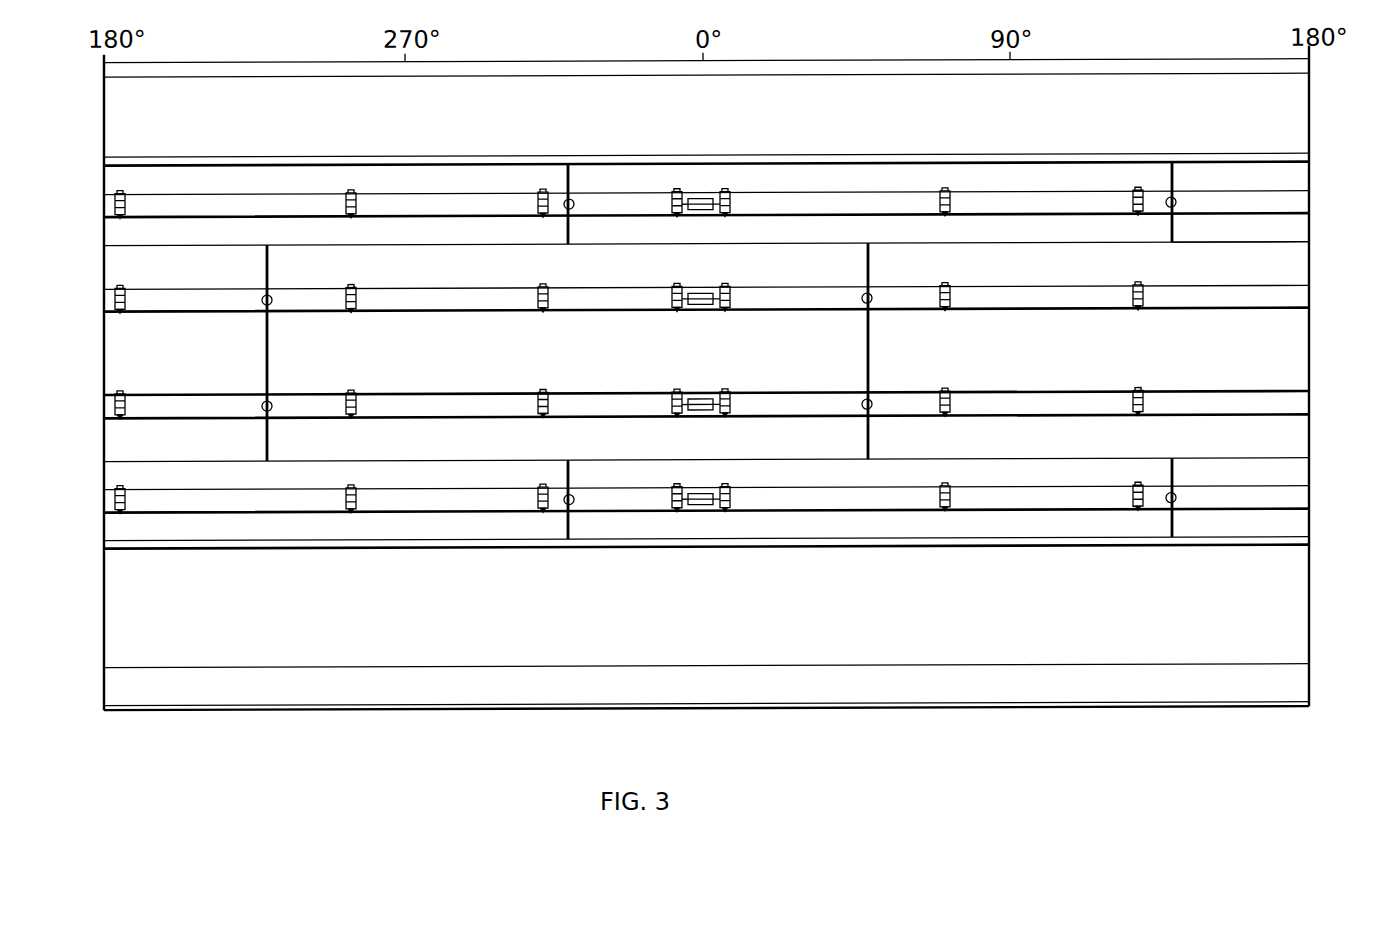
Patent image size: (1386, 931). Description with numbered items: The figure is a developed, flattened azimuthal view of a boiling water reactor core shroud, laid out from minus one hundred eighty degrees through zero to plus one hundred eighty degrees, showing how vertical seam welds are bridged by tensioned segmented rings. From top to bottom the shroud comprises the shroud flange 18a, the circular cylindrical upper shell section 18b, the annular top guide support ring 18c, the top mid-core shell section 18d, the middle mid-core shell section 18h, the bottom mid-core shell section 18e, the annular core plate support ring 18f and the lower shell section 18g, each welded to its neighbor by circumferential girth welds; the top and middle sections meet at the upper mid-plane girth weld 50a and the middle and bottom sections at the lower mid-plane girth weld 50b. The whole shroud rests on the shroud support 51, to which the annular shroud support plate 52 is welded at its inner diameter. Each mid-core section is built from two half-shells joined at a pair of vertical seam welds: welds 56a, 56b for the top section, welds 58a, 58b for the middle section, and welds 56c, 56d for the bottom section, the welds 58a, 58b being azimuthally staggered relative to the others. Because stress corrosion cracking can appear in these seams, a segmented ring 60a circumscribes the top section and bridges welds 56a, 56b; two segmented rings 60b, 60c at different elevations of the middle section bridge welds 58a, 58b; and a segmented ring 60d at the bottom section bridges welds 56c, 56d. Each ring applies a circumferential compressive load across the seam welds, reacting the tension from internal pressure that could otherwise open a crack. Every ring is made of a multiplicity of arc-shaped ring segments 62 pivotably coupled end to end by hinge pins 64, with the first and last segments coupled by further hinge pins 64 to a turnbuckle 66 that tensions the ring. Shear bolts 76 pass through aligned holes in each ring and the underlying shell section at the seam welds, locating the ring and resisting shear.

The shroud flange 18a is at (1195, 66).
The upper shell section 18b is at (1290, 100).
The top guide support ring 18c is at (1298, 159).
The top mid-core shell section 18d is at (1292, 235).
The bottom mid-core shell section 18e is at (1292, 528).
The core plate support ring 18f is at (1285, 546).
The lower shell section 18g is at (1288, 612).
The middle mid-core shell section 18h is at (1292, 361).
The upper mid-plane girth weld 50a is at (1008, 246).
The lower mid-plane girth weld 50b is at (1090, 458).
The shroud support 51 is at (1295, 688).
The shroud support plate 52 is at (1188, 711).
The vertical seam weld 56a is at (569, 182).
The vertical seam weld 56b is at (1173, 182).
The vertical seam weld 56c is at (569, 522).
The vertical seam weld 56d is at (1166, 522).
The vertical seam weld 58a is at (270, 353).
The vertical seam weld 58b is at (870, 343).
The segmented ring 60a is at (205, 180).
The segmented ring 60b is at (152, 313).
The segmented ring 60c is at (161, 421).
The segmented ring 60d is at (155, 515).
The ring segment 62 is at (275, 206).
The hinge pin 64 is at (121, 194).
The turnbuckle 66 is at (703, 200).
The shear bolt 76 is at (1176, 205).